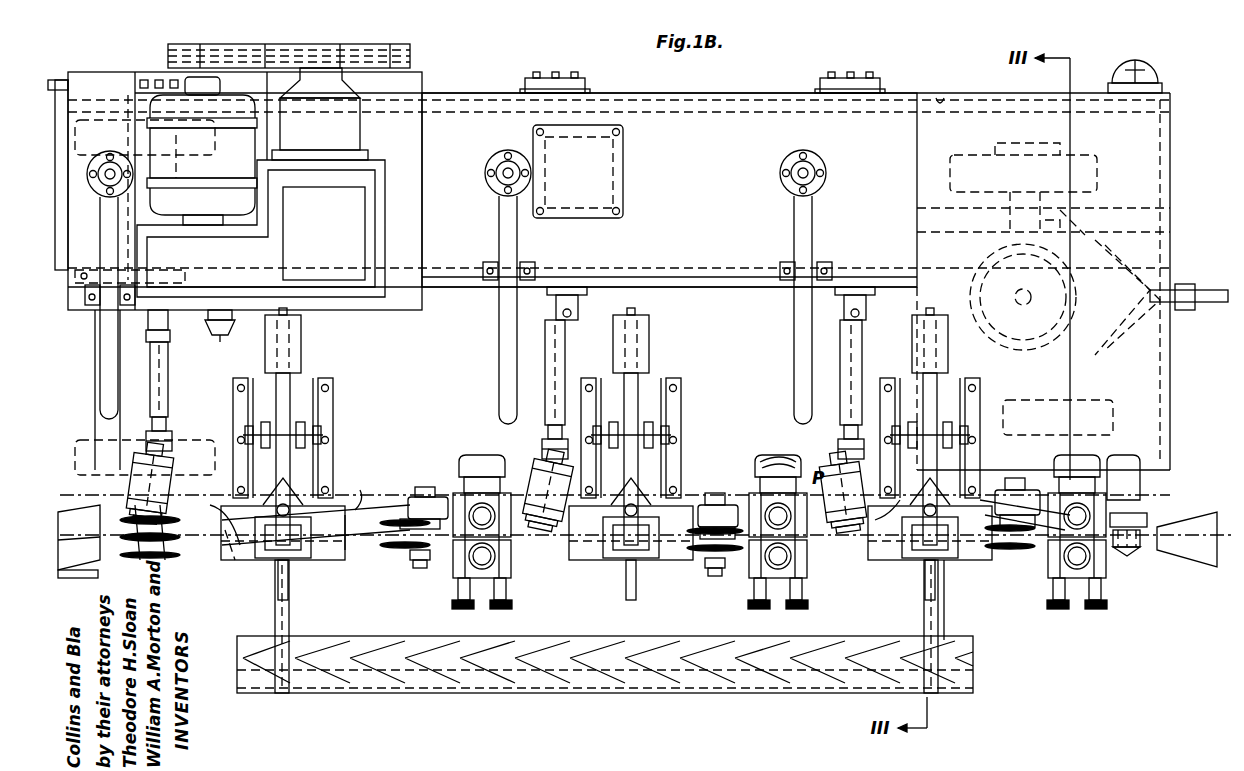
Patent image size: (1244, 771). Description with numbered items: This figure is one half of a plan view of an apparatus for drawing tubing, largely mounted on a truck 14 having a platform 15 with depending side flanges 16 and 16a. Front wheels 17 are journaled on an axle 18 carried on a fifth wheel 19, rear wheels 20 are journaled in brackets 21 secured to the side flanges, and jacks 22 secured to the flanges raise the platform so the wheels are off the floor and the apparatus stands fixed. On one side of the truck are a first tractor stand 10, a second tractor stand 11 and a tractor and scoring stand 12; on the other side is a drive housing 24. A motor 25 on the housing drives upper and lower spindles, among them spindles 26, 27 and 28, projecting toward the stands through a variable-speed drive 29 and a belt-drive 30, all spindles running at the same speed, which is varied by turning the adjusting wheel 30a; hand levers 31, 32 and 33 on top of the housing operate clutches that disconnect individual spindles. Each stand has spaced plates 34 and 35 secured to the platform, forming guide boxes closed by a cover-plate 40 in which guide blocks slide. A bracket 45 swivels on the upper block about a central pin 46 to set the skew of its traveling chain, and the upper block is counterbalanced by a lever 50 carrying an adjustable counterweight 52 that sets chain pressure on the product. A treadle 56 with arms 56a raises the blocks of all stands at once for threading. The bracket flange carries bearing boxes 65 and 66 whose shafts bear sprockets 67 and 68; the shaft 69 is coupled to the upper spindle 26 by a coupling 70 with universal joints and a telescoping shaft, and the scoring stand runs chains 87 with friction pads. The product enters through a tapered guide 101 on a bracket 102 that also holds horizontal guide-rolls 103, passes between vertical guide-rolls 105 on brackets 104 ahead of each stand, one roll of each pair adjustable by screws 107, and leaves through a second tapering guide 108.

The first tractor stand 10 is at (960, 448).
The second tractor stand 11 is at (656, 451).
The tractor and scoring stand 12 is at (316, 454).
The truck 14 is at (650, 93).
The platform 15 is at (387, 537).
The side flange 16 is at (352, 500).
The side flange 16a is at (940, 98).
The front wheel 17 is at (1078, 160).
The axle 18 is at (1010, 155).
The fifth wheel 19 is at (1099, 297).
The rear wheel 20 is at (85, 108).
The bracket 21 is at (891, 510).
The jack 22 is at (1158, 72).
The drive housing 24 is at (700, 278).
The motor 25 is at (167, 142).
The upper driving spindle 26 is at (868, 297).
The spindle 27 is at (580, 297).
The spindle 28 is at (174, 363).
The variable-speed drive 29 is at (261, 182).
The belt-drive 30 is at (287, 46).
The adjusting wheel 30a is at (220, 338).
The hand lever 31 is at (794, 228).
The hand lever 32 is at (499, 235).
The hand lever 33 is at (110, 239).
The plate 34 is at (655, 387).
The plate 35 is at (602, 389).
The cover-plate 40 is at (320, 562).
The bracket 45 is at (208, 501).
The central pin 46 is at (935, 540).
The lever 50 is at (290, 405).
The counterweight 52 is at (301, 345).
The treadle 56 is at (605, 678).
The arm 56a is at (275, 613).
The bearing box 65 is at (843, 492).
The bearing box 66 is at (1032, 500).
The sprocket 67 is at (140, 544).
The sprocket 68 is at (740, 510).
The shaft 69 is at (838, 410).
The coupling 70 is at (168, 390).
The chain 87 is at (225, 547).
The tapered guide 101 is at (1195, 556).
The bracket 102 is at (1147, 500).
The horizontal guide-rolls 103 is at (1128, 513).
The bracket 104 is at (776, 500).
The vertical guide-roll 105 is at (783, 520).
The screw 107 is at (462, 610).
The second tapering guide 108 is at (95, 501).